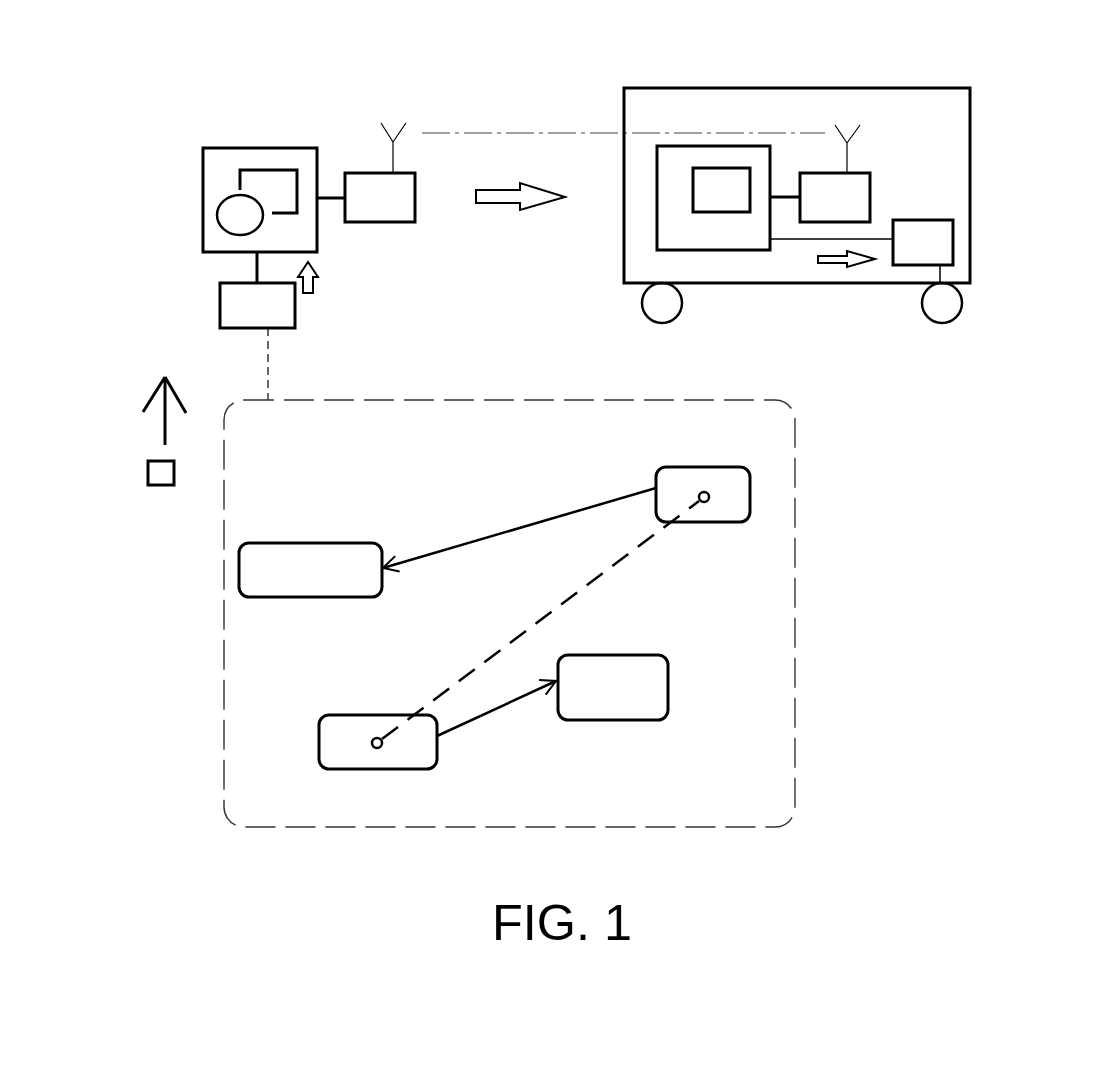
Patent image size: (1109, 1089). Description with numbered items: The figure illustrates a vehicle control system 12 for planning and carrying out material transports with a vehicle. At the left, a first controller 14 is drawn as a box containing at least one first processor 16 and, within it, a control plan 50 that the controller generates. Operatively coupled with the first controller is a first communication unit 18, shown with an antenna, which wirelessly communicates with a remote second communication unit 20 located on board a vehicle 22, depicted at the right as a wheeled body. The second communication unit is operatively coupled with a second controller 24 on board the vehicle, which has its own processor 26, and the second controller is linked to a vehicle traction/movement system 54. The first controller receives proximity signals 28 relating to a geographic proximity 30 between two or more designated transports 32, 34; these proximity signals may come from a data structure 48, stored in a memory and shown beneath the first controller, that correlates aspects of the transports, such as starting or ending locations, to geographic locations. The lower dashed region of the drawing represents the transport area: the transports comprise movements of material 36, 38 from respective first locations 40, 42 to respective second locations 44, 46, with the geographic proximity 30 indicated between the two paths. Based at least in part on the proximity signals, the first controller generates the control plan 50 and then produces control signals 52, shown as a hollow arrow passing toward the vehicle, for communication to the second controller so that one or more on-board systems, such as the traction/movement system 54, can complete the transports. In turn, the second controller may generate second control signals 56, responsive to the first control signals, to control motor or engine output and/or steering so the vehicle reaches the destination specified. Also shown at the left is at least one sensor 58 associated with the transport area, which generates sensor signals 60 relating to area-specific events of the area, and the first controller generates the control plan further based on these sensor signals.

The vehicle control system 12 is at (873, 45).
The first controller 14 is at (242, 145).
The first processor 16 is at (273, 168).
The first communication unit 18 is at (390, 220).
The second communication unit 20 is at (870, 187).
The vehicle 22 is at (747, 88).
The second controller 24 is at (735, 248).
The processor 26 is at (728, 213).
The proximity signals 28 is at (318, 286).
The geographic proximity 30 is at (587, 582).
The first designated transport 32 is at (528, 525).
The second designated transport 34 is at (495, 713).
The material of first transport 36 is at (703, 467).
The material of second transport 38 is at (385, 770).
The first location of first transport 40 is at (708, 502).
The first location of second transport 42 is at (373, 735).
The second location of first transport 44 is at (315, 542).
The second location of second transport 46 is at (630, 653).
The data structure 48 is at (218, 307).
The control plan 50 is at (240, 215).
The control signals 52 is at (503, 205).
The vehicle traction/movement system 54 is at (917, 220).
The second control signals 56 is at (837, 267).
The sensor 58 is at (147, 472).
The sensor signals 60 is at (160, 423).